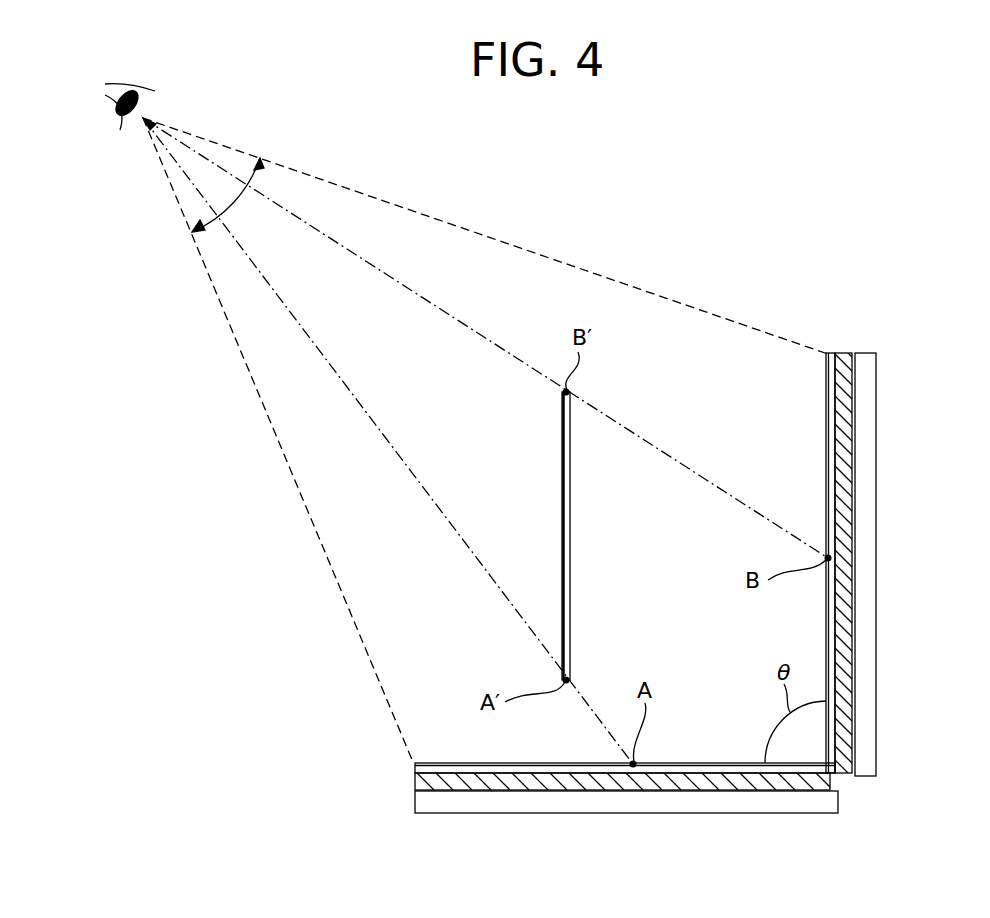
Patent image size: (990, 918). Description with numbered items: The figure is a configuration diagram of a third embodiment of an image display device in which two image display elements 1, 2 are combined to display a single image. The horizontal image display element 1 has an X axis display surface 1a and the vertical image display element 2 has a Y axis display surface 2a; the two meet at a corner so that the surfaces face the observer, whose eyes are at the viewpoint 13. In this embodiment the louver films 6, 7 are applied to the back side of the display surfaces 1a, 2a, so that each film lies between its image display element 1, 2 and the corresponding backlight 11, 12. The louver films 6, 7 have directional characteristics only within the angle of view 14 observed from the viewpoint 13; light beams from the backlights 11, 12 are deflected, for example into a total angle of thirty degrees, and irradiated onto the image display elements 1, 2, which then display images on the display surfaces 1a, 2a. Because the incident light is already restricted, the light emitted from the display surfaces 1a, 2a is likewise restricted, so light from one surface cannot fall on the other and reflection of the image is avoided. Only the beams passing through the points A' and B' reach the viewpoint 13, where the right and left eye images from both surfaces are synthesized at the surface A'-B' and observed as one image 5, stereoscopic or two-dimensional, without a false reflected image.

The image display element 1 is at (430, 763).
The X axis display surface 1a is at (465, 763).
The image display element 2 is at (826, 403).
The Y axis display surface 2a is at (826, 464).
The image 5 is at (571, 504).
The louver film 6 is at (755, 788).
The louver film 7 is at (845, 388).
The backlight 11 is at (530, 802).
The backlight 12 is at (860, 385).
The viewpoint 13 is at (110, 103).
The angle of view 14 is at (240, 197).